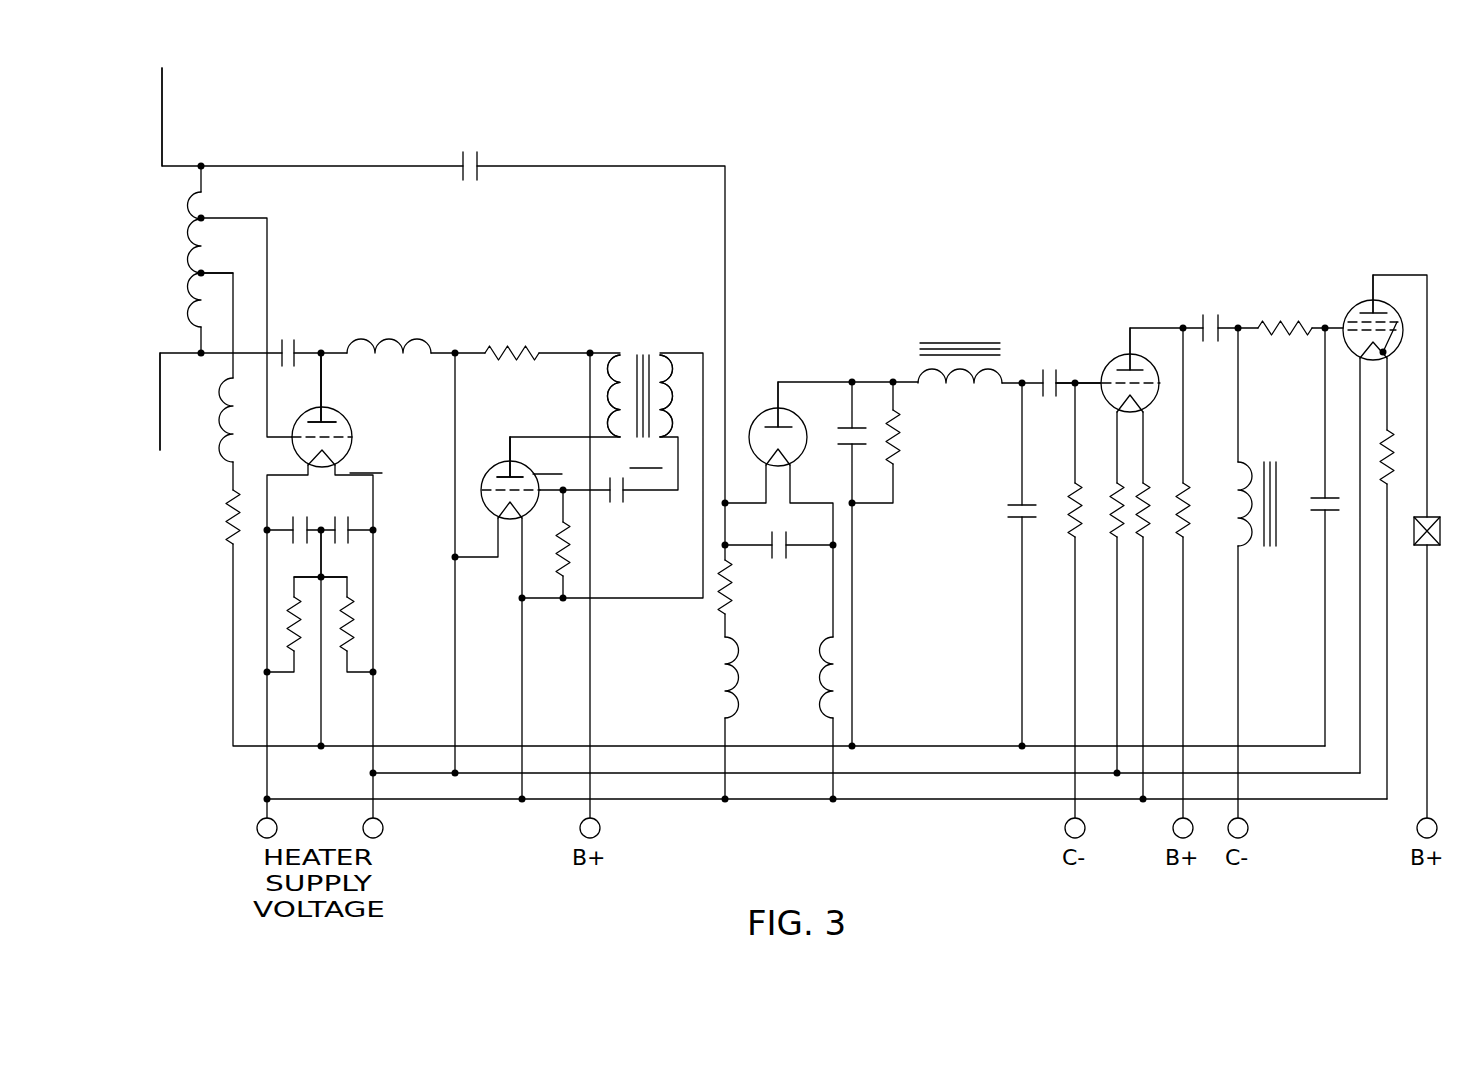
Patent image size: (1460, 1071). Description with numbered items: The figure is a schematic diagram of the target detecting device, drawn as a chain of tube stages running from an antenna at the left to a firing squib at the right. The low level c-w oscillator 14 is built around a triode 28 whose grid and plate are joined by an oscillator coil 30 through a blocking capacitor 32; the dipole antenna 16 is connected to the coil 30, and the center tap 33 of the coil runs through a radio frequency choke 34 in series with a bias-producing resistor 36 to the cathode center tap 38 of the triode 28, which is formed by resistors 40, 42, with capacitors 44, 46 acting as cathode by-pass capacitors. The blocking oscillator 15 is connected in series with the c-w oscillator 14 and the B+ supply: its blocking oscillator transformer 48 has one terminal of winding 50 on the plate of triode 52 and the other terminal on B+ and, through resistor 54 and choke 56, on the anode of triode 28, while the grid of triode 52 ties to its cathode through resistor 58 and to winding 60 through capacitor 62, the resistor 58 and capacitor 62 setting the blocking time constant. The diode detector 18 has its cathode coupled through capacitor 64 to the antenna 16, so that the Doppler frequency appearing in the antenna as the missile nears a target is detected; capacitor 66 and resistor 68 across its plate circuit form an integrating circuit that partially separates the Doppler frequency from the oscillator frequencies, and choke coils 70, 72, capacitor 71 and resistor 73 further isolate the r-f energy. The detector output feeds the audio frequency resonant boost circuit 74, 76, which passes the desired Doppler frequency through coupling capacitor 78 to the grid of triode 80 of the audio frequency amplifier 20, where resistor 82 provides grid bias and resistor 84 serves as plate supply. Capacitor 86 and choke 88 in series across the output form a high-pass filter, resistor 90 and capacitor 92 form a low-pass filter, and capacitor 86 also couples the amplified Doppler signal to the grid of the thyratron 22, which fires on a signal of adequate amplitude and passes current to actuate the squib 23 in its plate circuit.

The low level c-w oscillator 14 is at (337, 414).
The blocking oscillator 15 is at (523, 478).
The dipole antenna 16 is at (162, 100).
The diode detector 18 is at (760, 420).
The audio frequency amplifier 20 is at (1066, 298).
The thyratron 22 is at (1355, 310).
The squib 23 is at (1416, 546).
The triode 28 is at (322, 405).
The oscillator coil 30 is at (203, 190).
The blocking capacitor 32 is at (294, 350).
The center tap 33 is at (215, 270).
The radio frequency choke 34 is at (218, 437).
The bias-producing resistor 36 is at (226, 512).
The cathode center tap 38 is at (322, 576).
The resistor 40 is at (344, 652).
The resistor 42 is at (296, 652).
The cathode by-pass capacitor 44 is at (293, 520).
The cathode by-pass capacitor 46 is at (337, 520).
The blocking oscillator transformer 48 is at (639, 412).
The winding 50 is at (620, 352).
The triode 52 is at (490, 470).
The resistor 54 is at (520, 348).
The choke 56 is at (382, 345).
The resistor 58 is at (562, 551).
The winding 60 is at (668, 352).
The capacitor 62 is at (624, 500).
The capacitor 64 is at (462, 180).
The capacitor 66 is at (840, 446).
The resistor 68 is at (900, 440).
The choke coil 70 is at (740, 645).
The capacitor 71 is at (786, 553).
The choke coil 72 is at (820, 716).
The resistor 73 is at (730, 595).
The audio frequency resonant boost circuit 74 is at (918, 368).
The audio frequency resonant boost circuit 76 is at (1014, 502).
The coupling capacitor 78 is at (1041, 370).
The triode 80 is at (1105, 364).
The grid bias resistor 82 is at (1072, 494).
The resistor 84 is at (1185, 483).
The capacitor 86 is at (1200, 322).
The choke 88 is at (1246, 464).
The resistor 90 is at (1270, 325).
The capacitor 92 is at (1318, 498).